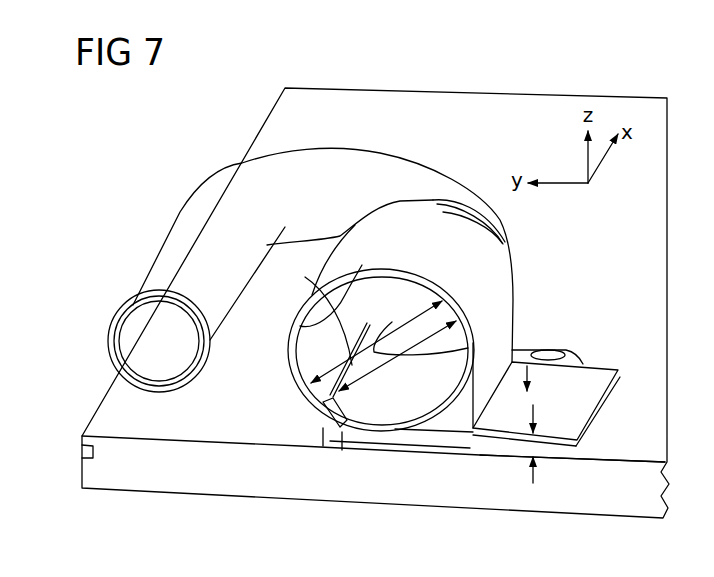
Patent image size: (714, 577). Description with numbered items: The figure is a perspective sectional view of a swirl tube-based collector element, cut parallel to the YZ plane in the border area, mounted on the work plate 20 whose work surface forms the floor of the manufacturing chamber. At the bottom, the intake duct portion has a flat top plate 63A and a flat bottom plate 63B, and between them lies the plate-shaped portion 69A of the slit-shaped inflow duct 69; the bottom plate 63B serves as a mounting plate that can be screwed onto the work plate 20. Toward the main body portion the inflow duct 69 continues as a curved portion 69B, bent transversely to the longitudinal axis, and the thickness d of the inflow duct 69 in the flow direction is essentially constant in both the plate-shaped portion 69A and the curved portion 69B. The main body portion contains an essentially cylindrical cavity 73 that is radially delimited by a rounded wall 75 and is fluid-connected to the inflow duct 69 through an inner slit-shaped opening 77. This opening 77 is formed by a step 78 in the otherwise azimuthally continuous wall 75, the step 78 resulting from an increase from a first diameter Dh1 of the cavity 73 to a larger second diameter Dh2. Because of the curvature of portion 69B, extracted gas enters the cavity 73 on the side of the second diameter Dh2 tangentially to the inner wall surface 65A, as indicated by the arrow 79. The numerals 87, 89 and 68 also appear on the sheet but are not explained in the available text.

The work plate 20 is at (140, 457).
The cavity 73 is at (347, 308).
The rounded wall 75 is at (353, 304).
The clip ring hole wall 89 is at (364, 286).
The pipe 87 is at (295, 350).
The inner wall surface 65A is at (293, 350).
The slit-shaped opening 77 is at (300, 397).
The step 78 is at (296, 418).
The arrow 79 is at (323, 428).
The inflow duct 69 is at (548, 351).
The plate-shaped portion 69A is at (475, 441).
The curved portion 69B is at (355, 454).
The top plate 63A is at (590, 382).
The bottom plate 63B is at (568, 453).
The plate edge 68 is at (604, 433).
The thickness d is at (533, 447).
The first diameter Dh1 is at (380, 378).
The second diameter Dh2 is at (376, 334).